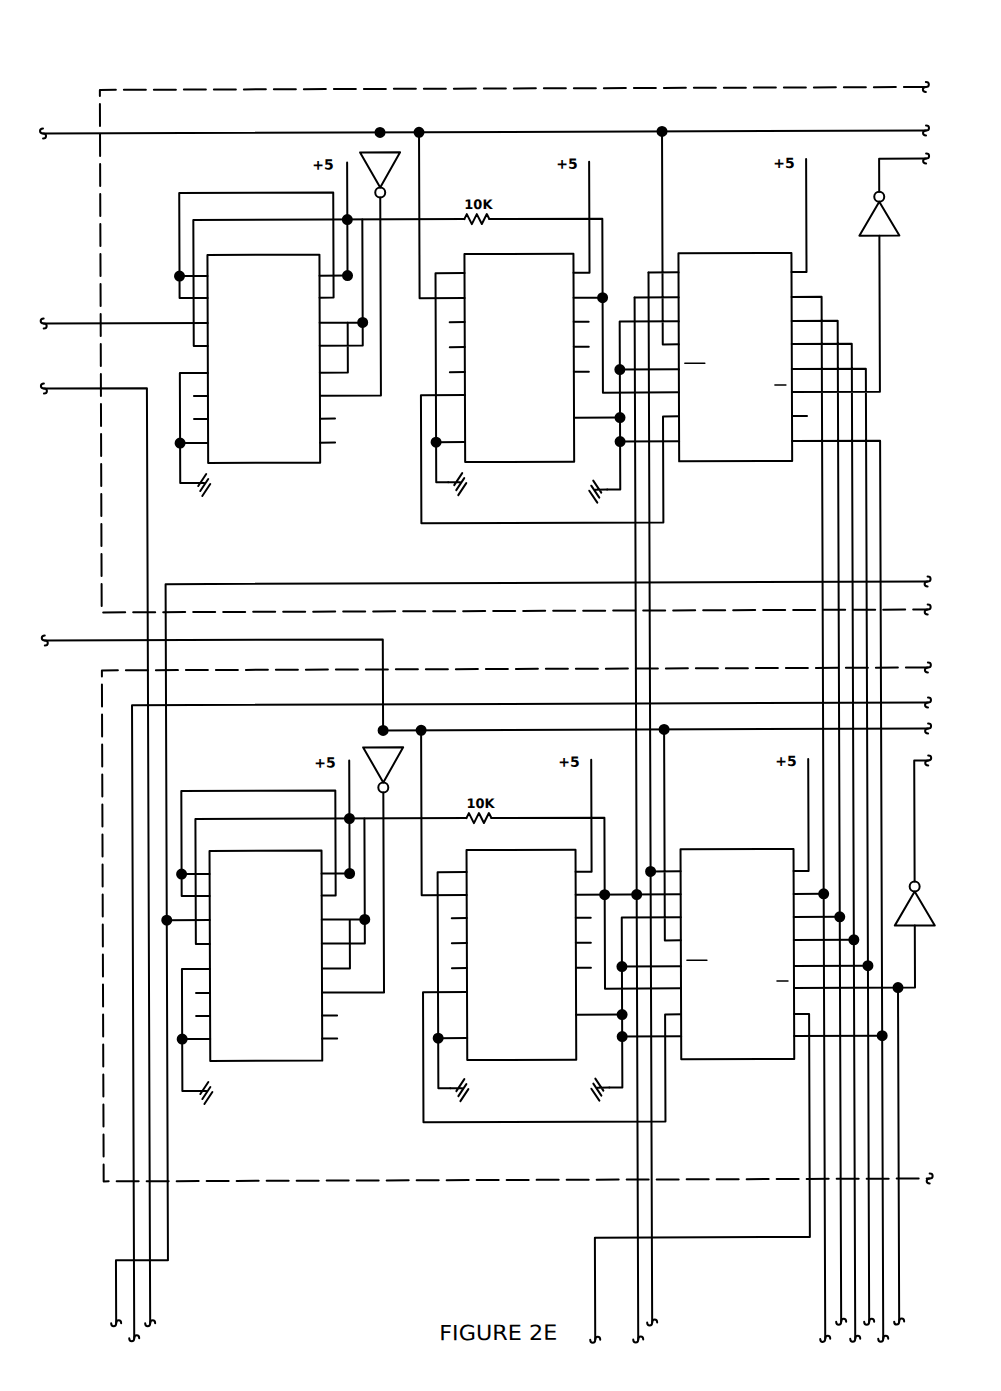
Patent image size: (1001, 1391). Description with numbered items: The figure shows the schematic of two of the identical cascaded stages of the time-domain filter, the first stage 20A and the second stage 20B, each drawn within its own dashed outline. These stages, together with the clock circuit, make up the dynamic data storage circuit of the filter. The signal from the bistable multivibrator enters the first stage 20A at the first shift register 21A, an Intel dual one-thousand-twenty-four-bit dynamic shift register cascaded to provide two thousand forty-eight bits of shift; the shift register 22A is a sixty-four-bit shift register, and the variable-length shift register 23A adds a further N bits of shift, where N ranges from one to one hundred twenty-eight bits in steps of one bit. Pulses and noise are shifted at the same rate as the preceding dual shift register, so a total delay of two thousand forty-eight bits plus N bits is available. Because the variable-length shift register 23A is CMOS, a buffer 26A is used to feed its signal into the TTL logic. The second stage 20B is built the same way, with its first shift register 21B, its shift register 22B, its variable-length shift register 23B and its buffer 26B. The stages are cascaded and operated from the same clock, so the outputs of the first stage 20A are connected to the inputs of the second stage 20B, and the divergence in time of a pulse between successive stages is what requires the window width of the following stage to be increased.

The first stage 20A is at (337, 88).
The second stage 20B is at (315, 1181).
The first shift register 21A is at (230, 462).
The first shift register 21B is at (232, 1061).
The shift register 22A is at (555, 463).
The shift register 22B is at (563, 1060).
The variable-length shift register 23A is at (770, 462).
The variable-length shift register 23B is at (770, 1060).
The buffer 26A is at (860, 229).
The buffer 26B is at (928, 930).